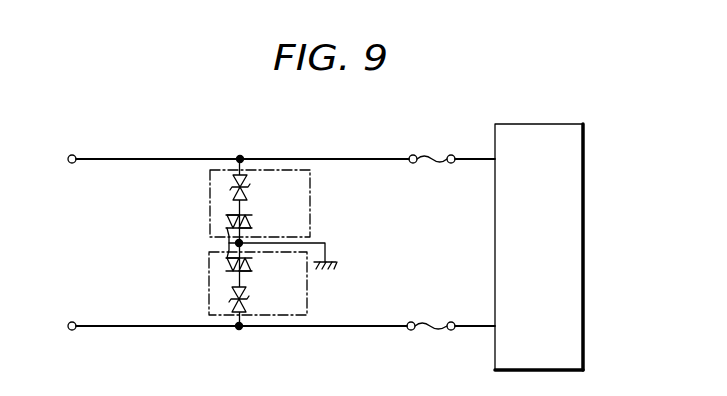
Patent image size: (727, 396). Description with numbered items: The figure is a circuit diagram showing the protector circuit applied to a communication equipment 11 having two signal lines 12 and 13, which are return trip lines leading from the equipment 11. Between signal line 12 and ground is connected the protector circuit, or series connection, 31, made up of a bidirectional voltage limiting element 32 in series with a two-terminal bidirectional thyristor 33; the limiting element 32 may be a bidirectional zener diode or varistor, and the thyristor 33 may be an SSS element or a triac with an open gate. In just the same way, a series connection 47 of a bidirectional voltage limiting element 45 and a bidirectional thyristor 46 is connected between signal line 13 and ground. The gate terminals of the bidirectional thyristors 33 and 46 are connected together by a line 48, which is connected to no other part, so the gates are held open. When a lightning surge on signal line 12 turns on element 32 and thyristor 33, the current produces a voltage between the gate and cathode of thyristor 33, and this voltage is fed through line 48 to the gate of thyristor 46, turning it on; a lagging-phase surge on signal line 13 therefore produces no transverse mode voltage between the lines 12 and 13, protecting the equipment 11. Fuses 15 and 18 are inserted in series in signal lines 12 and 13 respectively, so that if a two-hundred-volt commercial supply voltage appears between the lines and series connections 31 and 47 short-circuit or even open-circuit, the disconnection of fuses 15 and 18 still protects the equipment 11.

The equipment 11 is at (584, 134).
The signal line 12 is at (141, 157).
The signal line 13 is at (140, 329).
The fuse 15 is at (433, 158).
The fuse 18 is at (432, 331).
The protector circuit 31 is at (311, 199).
The bidirectional voltage limiting element 32 is at (249, 188).
The bidirectional thyristor 33 is at (252, 214).
The bidirectional voltage limiting element 45 is at (249, 300).
The bidirectional thyristor 46 is at (252, 264).
The series connection 47 is at (308, 293).
The line 48 is at (228, 243).